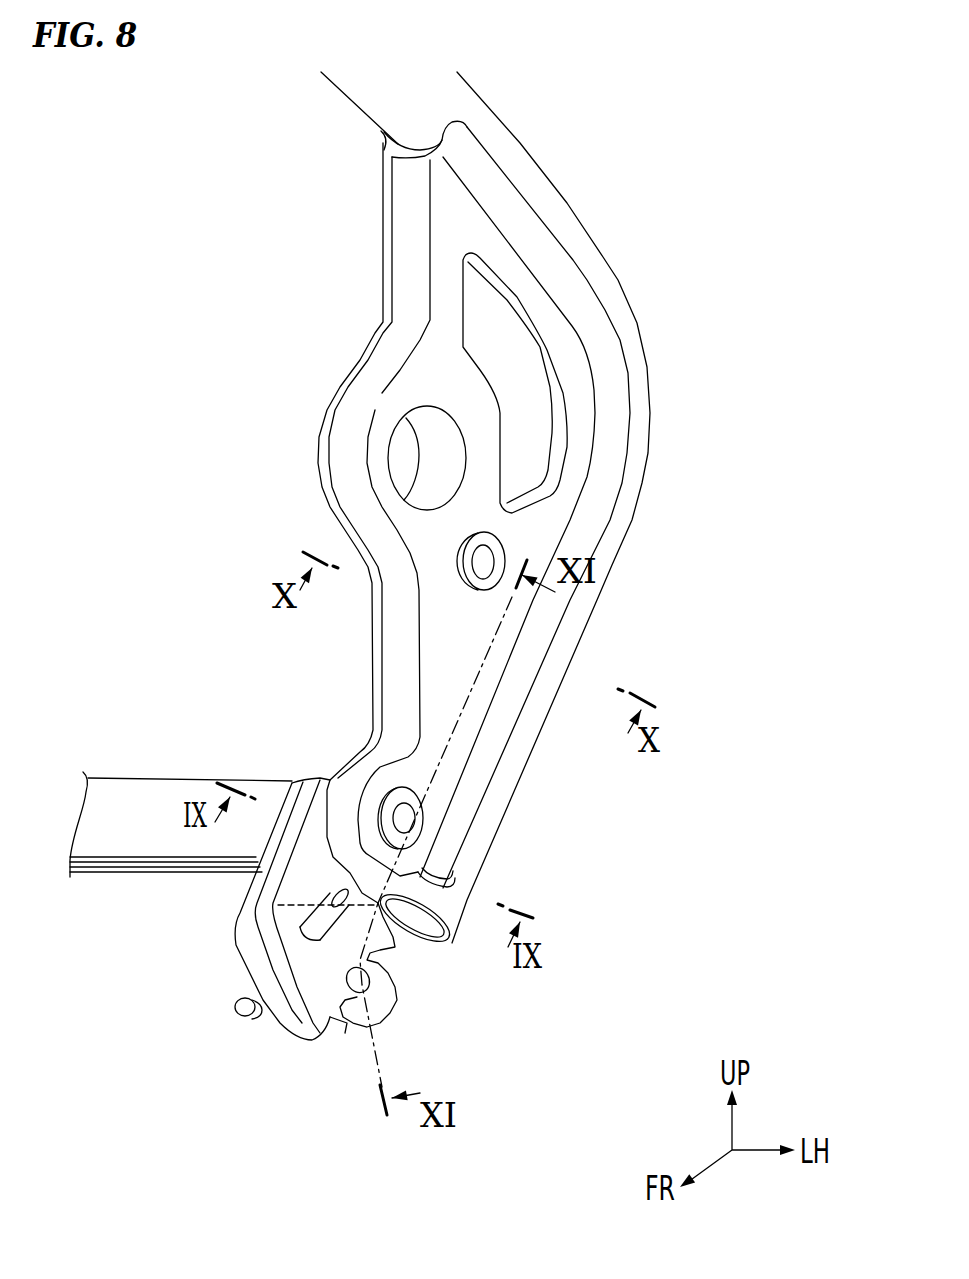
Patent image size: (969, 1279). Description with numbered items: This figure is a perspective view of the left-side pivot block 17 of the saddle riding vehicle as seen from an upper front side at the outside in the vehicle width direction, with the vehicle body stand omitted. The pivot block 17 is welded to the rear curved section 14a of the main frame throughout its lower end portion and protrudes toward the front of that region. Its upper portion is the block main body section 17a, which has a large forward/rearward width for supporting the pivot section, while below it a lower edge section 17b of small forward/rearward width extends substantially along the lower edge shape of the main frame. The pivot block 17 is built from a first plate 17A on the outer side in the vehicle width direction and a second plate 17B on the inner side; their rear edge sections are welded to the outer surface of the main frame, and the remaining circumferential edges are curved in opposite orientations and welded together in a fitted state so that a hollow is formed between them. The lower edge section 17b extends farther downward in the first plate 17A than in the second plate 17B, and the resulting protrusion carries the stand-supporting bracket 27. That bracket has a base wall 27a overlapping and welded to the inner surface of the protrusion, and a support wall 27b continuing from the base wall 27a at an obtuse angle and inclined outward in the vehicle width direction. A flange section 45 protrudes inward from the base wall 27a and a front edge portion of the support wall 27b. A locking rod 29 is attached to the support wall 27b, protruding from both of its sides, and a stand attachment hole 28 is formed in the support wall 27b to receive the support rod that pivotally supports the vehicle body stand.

The rear curved section 14a is at (648, 432).
The pivot block 17 is at (650, 322).
The second plate 17B is at (383, 264).
The block main body section 17a is at (549, 525).
The first plate 17A is at (453, 705).
The lower edge section 17b is at (430, 808).
The stand-supporting bracket 27 is at (230, 950).
The base wall 27a is at (293, 802).
The support wall 27b is at (318, 1002).
The stand attachment hole 28 is at (372, 983).
The locking rod 29 is at (305, 890).
The flange section 45 is at (263, 978).